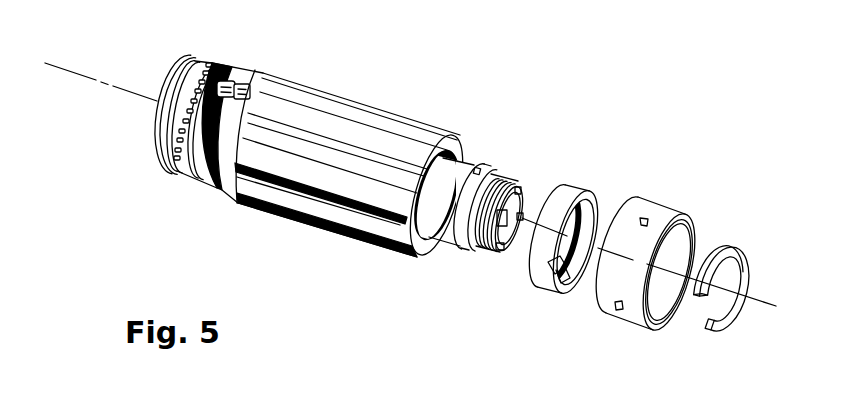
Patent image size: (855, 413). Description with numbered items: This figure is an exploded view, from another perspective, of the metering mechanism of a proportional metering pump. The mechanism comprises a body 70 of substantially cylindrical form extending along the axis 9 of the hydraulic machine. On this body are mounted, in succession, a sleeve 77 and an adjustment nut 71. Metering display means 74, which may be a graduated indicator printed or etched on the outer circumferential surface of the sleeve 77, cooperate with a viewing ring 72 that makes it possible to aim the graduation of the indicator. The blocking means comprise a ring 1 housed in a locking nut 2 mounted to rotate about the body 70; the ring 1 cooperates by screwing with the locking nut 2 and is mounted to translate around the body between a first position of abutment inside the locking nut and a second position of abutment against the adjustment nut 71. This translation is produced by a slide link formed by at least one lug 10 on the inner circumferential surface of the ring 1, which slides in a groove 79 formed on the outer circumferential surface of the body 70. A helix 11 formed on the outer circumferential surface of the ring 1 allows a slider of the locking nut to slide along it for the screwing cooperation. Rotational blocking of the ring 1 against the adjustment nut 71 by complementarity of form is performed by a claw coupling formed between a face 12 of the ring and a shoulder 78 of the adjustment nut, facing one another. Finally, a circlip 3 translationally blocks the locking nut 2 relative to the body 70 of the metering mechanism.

The ring 1 is at (563, 233).
The locking nut 2 is at (607, 292).
The circlip 3 is at (715, 330).
The axis 9 is at (752, 302).
The lug 10 is at (566, 264).
The helix 11 is at (572, 187).
The face 12 is at (580, 220).
The body 70 is at (445, 228).
The adjustment nut 71 is at (303, 200).
The viewing ring 72 is at (228, 162).
The metering display means 74 is at (242, 86).
The sleeve 77 is at (222, 74).
The shoulder 78 is at (463, 163).
The groove 79 is at (480, 174).